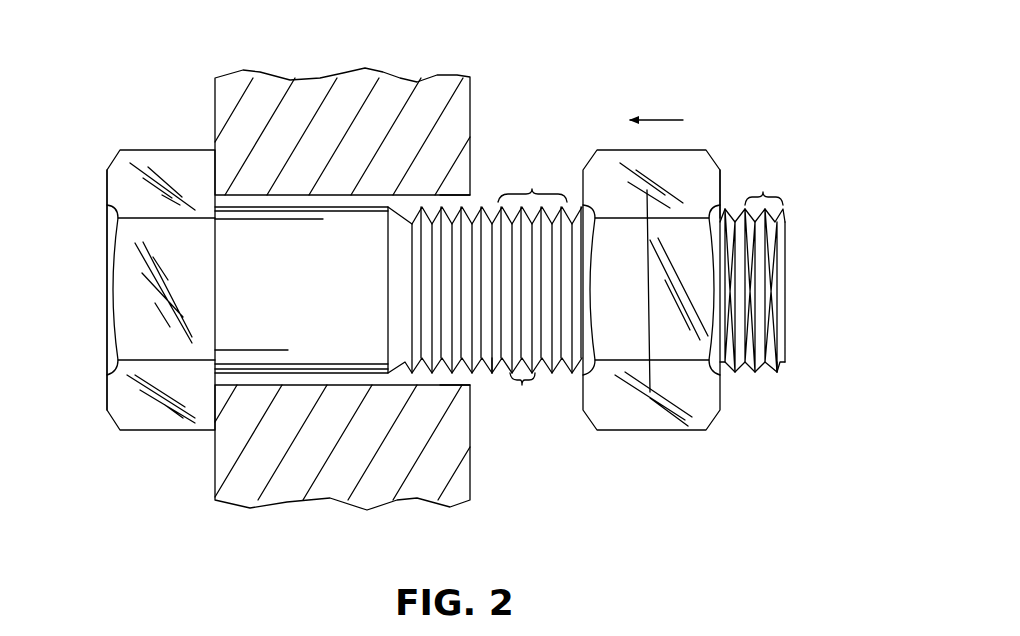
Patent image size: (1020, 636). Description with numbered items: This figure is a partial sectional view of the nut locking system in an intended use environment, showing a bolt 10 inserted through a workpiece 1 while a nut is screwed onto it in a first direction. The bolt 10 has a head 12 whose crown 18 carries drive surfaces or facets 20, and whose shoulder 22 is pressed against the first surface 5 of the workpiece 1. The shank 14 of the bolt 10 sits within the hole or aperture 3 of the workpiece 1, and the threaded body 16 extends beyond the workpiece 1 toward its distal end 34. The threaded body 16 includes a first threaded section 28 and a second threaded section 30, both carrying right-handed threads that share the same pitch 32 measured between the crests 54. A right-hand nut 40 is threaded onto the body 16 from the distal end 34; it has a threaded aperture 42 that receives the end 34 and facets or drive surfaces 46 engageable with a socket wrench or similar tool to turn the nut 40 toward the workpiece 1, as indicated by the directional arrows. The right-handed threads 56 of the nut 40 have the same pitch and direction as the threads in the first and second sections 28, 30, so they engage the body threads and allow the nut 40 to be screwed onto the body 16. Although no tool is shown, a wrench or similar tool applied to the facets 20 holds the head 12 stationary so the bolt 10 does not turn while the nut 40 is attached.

The bolt 10 is at (602, 50).
The workpiece 1 is at (455, 103).
The aperture 3 is at (455, 203).
The head 12 is at (130, 130).
The shoulder 22 is at (222, 175).
The facets 20 is at (201, 263).
The first surface 5 is at (222, 425).
The crown 18 is at (107, 262).
The shank 14 is at (299, 305).
The threaded body 16 is at (506, 389).
The first threaded section 28 is at (532, 190).
The pitch 32 is at (522, 385).
The crests 54 is at (493, 376).
The right-hand nut 40 is at (699, 440).
The drive surfaces 46 is at (688, 162).
The threaded aperture 42 is at (725, 205).
The right-handed threads 56 is at (724, 372).
The second threaded section 30 is at (763, 193).
The distal end 34 is at (785, 281).